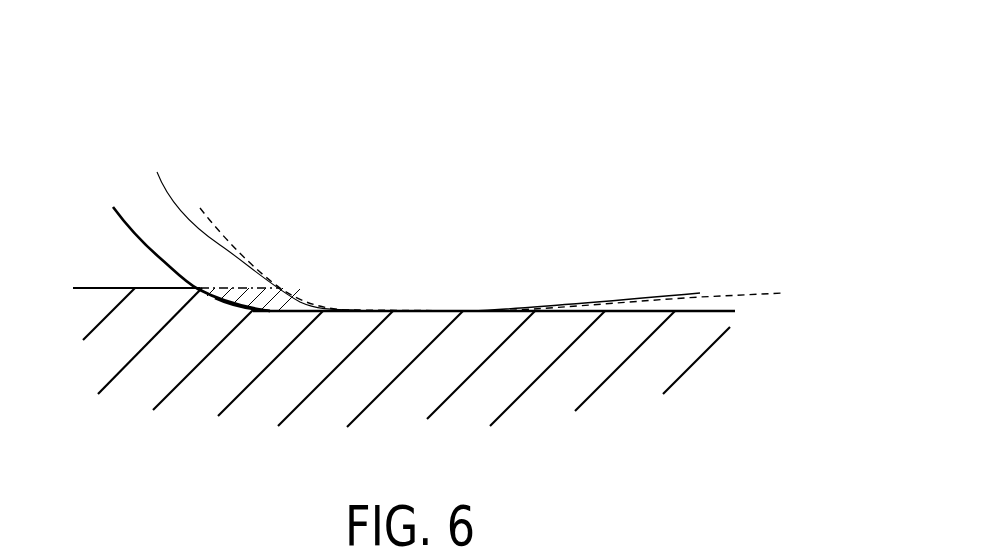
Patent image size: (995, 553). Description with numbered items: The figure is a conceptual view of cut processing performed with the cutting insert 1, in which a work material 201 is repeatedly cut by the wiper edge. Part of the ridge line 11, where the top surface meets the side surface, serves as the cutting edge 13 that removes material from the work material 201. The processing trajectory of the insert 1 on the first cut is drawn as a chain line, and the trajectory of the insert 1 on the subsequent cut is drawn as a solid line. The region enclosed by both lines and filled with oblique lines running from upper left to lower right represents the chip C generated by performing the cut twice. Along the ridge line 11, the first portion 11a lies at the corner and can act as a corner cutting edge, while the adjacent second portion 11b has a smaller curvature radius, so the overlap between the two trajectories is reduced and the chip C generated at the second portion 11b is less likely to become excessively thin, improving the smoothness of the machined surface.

The insert 1 is at (167, 93).
The ridge line 11 is at (153, 255).
The cutting edge 13 is at (160, 178).
The first portion 11a is at (178, 278).
The second portion 11b is at (235, 310).
The work material 201 is at (698, 310).
The chip C is at (283, 293).